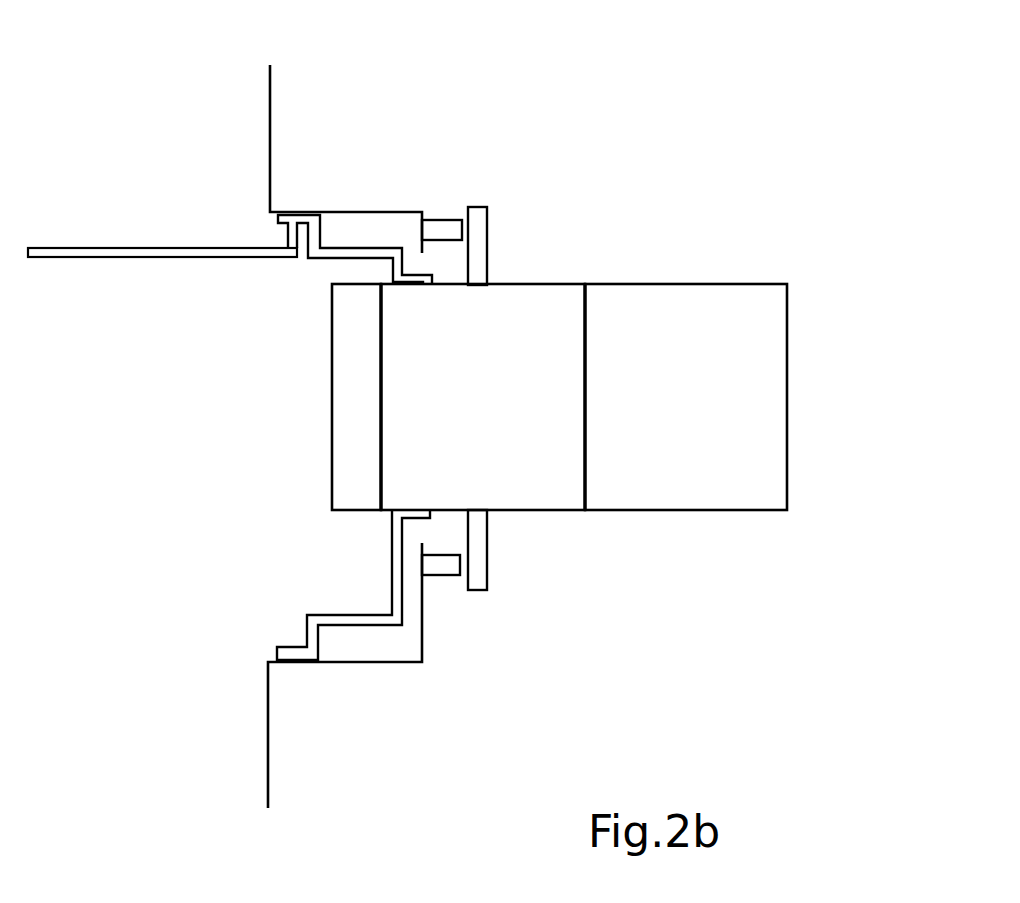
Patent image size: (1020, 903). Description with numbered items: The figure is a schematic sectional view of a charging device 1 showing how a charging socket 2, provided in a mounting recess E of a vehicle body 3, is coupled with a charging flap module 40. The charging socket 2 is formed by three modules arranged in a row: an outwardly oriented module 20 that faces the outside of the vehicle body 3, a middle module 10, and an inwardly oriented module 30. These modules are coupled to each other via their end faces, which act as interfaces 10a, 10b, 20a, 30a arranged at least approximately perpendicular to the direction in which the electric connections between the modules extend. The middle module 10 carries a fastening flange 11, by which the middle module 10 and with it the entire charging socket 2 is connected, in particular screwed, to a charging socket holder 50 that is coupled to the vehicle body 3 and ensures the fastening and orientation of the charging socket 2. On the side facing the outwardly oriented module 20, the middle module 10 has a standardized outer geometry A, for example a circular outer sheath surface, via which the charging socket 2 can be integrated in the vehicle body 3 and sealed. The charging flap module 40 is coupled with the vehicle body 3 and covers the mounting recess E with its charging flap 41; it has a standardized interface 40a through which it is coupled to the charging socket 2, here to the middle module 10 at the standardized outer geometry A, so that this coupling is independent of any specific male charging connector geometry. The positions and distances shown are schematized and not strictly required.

The charging device 1 is at (666, 74).
The charging socket 2 is at (536, 268).
The vehicle body 3 is at (286, 104).
The middle module 10 is at (546, 516).
The interface 10a is at (384, 453).
The interface 10b is at (581, 420).
The fastening flange 11 is at (489, 566).
The outwardly oriented module 20 is at (344, 514).
The interface 20a is at (378, 351).
The inwardly oriented module 30 is at (742, 518).
The interface 30a is at (588, 363).
The charging flap module 40 is at (302, 264).
The standardized interface 40a is at (431, 521).
The charging flap 41 is at (160, 248).
The charging socket holder 50 is at (439, 212).
The standardized outer geometry A is at (426, 289).
The mounting recess E is at (292, 452).